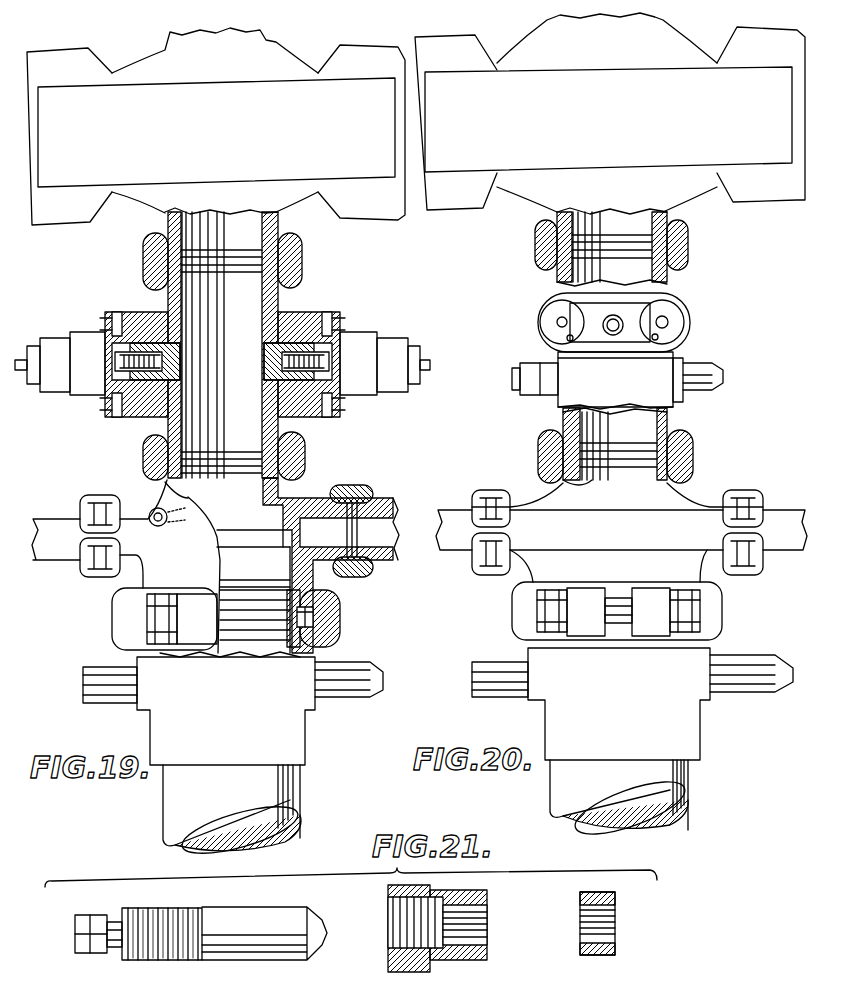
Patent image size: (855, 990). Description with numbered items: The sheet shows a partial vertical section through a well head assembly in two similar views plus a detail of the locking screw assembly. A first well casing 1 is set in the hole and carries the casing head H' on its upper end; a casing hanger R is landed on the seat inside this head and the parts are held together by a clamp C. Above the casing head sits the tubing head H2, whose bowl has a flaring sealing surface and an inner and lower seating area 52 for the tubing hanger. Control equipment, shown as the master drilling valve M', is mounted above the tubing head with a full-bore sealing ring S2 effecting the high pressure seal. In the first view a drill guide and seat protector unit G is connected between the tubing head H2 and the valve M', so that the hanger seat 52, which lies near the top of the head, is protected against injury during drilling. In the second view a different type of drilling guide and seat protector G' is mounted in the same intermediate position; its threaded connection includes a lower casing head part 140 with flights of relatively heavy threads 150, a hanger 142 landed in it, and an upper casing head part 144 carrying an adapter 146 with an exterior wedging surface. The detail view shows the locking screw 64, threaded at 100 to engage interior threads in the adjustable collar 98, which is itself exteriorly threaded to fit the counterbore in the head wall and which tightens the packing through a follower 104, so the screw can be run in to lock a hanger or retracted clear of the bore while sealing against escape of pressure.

In FIG. 19, the master drilling valve M' is at (216, 135).
In FIG. 20, the master drilling valve M' is at (610, 128).
In FIG. 19, the drill guide and seat protector unit G is at (222, 350).
In FIG. 19, the sealing ring S2 is at (238, 463).
In FIG. 20, the sealing ring S2 is at (633, 455).
In FIG. 19, the locking screw 64 is at (150, 512).
In FIG. 21, the locking screw 64 is at (238, 917).
In FIG. 19, the seating area 52 is at (186, 491).
In FIG. 20, the seating area 52 is at (592, 480).
In FIG. 19, the tubing head H2 is at (300, 507).
In FIG. 20, the tubing head H2 is at (692, 507).
In FIG. 19, the casing hanger R is at (230, 570).
In FIG. 19, the clamp C is at (338, 640).
In FIG. 20, the clamp C is at (717, 618).
In FIG. 19, the casing head H' is at (233, 708).
In FIG. 20, the casing head H' is at (632, 704).
In FIG. 19, the first well casing 1 is at (302, 797).
In FIG. 20, the first well casing 1 is at (688, 785).
In FIG. 20, the lower casing head part 140 is at (548, 305).
In FIG. 20, the flights of relatively heavy threads 150 is at (667, 302).
In FIG. 20, the upper casing head part 144 is at (557, 322).
In FIG. 20, the hanger 142 is at (673, 318).
In FIG. 20, the adapter 146 is at (568, 339).
In FIG. 20, the drilling guide and seat protector G' is at (619, 374).
In FIG. 21, the threads of the locking screw 100 is at (158, 910).
In FIG. 21, the adjustable collar 98 is at (388, 898).
In FIG. 21, the follower 104 is at (615, 895).